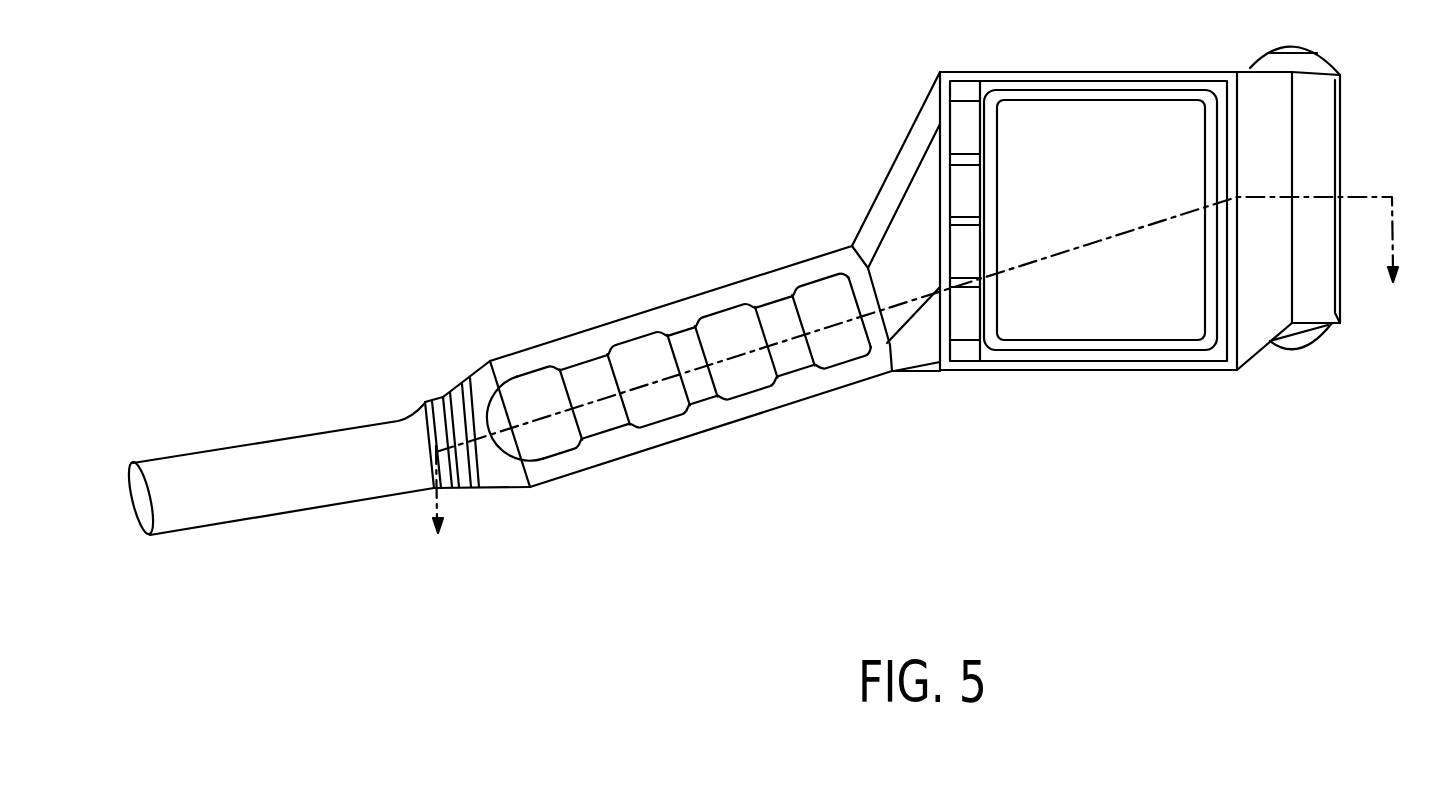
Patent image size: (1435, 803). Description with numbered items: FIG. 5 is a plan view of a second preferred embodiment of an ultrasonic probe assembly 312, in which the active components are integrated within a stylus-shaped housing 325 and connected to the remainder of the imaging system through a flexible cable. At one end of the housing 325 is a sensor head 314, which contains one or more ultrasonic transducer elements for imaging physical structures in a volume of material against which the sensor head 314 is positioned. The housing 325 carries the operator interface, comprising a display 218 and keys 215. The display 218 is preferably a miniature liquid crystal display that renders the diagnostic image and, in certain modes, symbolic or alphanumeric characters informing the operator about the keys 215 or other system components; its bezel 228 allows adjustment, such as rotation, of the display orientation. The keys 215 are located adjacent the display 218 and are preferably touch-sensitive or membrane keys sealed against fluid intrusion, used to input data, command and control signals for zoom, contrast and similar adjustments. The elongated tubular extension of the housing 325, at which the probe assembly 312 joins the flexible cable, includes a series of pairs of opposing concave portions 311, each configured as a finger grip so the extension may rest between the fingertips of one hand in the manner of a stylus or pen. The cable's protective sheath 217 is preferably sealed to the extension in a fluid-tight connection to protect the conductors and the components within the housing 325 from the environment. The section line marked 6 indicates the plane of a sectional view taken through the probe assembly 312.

The protective sheath 217 is at (248, 443).
The probe assembly 312 is at (494, 641).
The opposing concave portions 311 is at (640, 348).
The stylus-shaped housing 325 is at (1002, 372).
The keys 215 is at (965, 180).
The bezel 228 is at (1148, 95).
The display 218 is at (1050, 117).
The sensor head 314 is at (1310, 312).
The section line 6- 6 is at (917, 387).